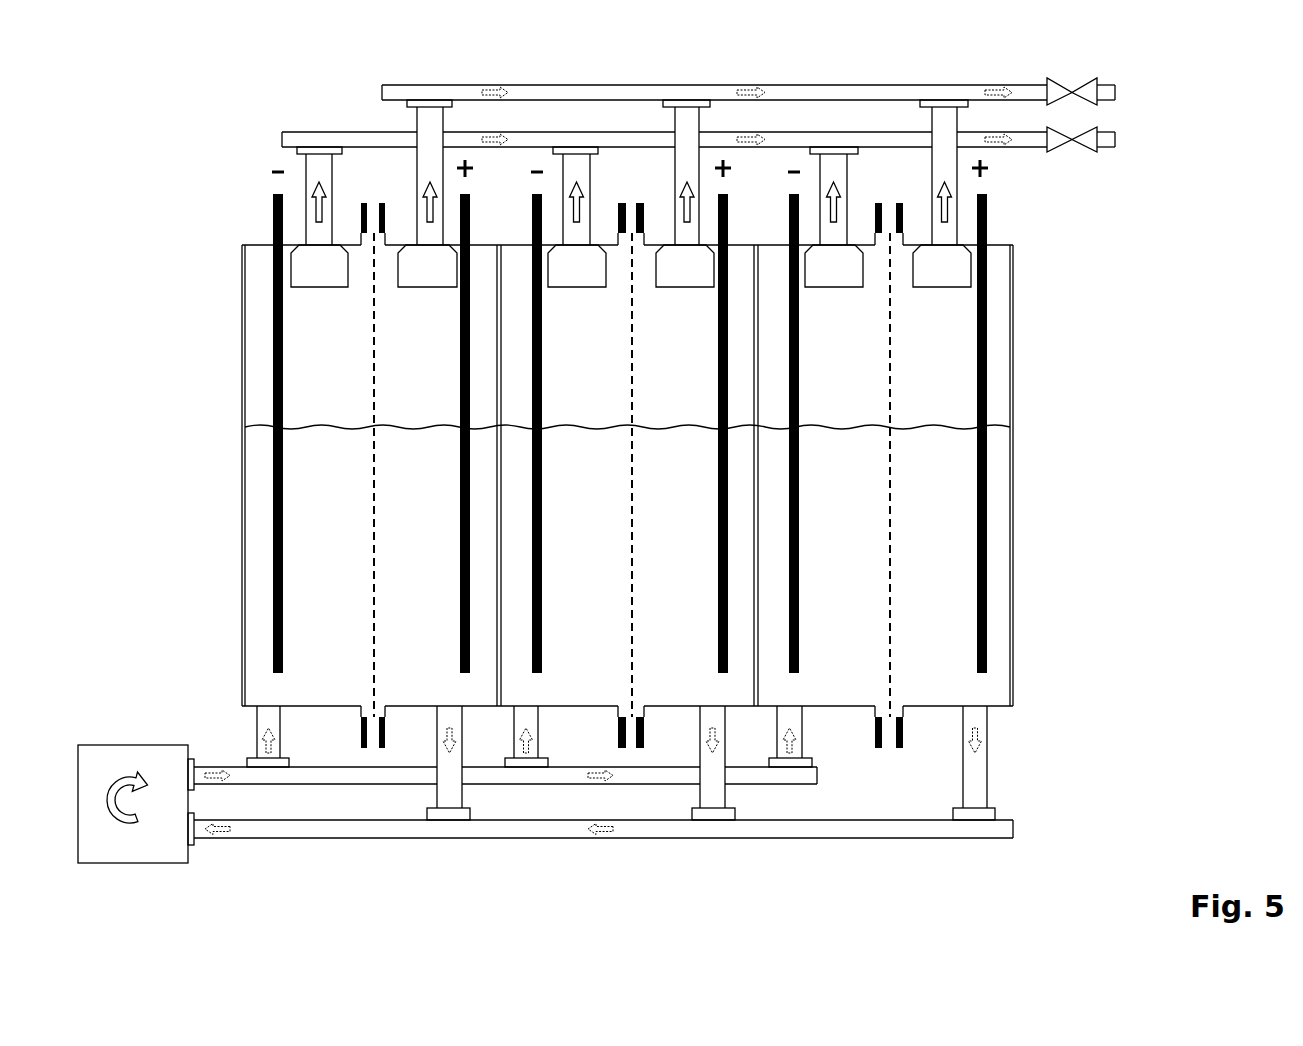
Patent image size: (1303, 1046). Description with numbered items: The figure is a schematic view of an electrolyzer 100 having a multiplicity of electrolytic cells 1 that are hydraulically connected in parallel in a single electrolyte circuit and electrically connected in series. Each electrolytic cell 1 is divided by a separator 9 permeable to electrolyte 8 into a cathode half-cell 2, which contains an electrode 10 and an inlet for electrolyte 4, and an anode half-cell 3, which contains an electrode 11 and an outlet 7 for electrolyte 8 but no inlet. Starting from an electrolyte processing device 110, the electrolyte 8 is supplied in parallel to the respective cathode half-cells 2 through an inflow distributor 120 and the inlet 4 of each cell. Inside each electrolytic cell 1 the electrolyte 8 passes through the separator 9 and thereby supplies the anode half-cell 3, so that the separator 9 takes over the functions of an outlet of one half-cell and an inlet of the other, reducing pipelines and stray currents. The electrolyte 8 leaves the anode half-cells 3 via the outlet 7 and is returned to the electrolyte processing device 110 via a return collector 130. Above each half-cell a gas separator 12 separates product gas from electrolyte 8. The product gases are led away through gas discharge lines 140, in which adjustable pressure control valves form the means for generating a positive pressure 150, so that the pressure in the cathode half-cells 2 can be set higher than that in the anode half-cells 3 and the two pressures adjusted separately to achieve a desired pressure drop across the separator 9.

The electrolyzer 100 is at (196, 162).
The electrolytic cell 1 is at (243, 365).
The cathode half-cell 2 is at (330, 366).
The anode half-cell 3 is at (434, 366).
The inlet for electrolyte 4 is at (257, 725).
The outlet for electrolyte 7 is at (978, 770).
The electrolyte 8 is at (257, 627).
The separator 9 is at (890, 670).
The electrode 10 is at (266, 556).
The electrode 11 is at (985, 547).
The gas separator 12 is at (306, 262).
The electrolyte processing device 110 is at (148, 759).
The inflow distributor 120 is at (817, 773).
The return collector 130 is at (1003, 830).
The gas discharge lines 140 is at (980, 140).
The means for generating a positive pressure 150 is at (977, 92).